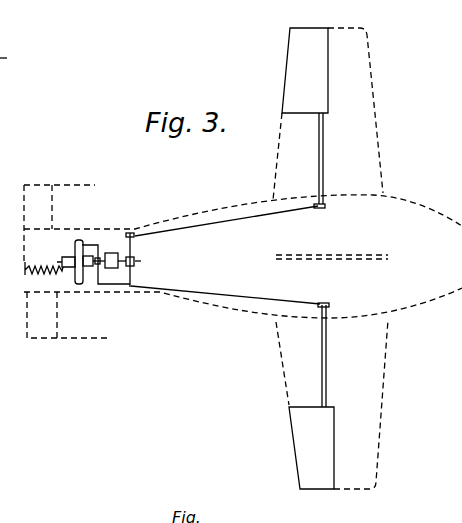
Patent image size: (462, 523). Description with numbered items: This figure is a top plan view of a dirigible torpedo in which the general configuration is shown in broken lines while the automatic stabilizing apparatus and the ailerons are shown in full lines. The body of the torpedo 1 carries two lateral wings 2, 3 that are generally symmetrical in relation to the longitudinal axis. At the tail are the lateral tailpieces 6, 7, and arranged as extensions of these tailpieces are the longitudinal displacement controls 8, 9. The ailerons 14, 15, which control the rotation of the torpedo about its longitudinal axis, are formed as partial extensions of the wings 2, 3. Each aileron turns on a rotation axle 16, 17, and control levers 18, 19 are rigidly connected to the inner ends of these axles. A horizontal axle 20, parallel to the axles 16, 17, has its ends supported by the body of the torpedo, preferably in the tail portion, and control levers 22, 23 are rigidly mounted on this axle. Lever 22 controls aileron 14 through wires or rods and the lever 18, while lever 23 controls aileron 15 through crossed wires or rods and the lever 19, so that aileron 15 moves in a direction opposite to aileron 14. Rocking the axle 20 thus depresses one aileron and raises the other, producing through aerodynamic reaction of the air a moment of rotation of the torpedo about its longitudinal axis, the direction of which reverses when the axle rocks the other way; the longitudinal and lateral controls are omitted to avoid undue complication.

The body of the torpedo 1 is at (408, 199).
The lateral wing 2 is at (371, 108).
The lateral wing 3 is at (378, 375).
The lateral tailpiece 6 is at (135, 222).
The lateral tailpiece 7 is at (133, 300).
The longitudinal displacement control 8 is at (40, 190).
The longitudinal displacement control 9 is at (40, 332).
The aileron 14 is at (288, 64).
The aileron 15 is at (300, 456).
The rotation axle 16 is at (318, 161).
The rotation axle 17 is at (322, 365).
The control lever 18 is at (312, 205).
The control lever 19 is at (318, 305).
The horizontal axle 20 is at (131, 285).
The control lever 22 is at (136, 233).
The control lever 23 is at (129, 290).